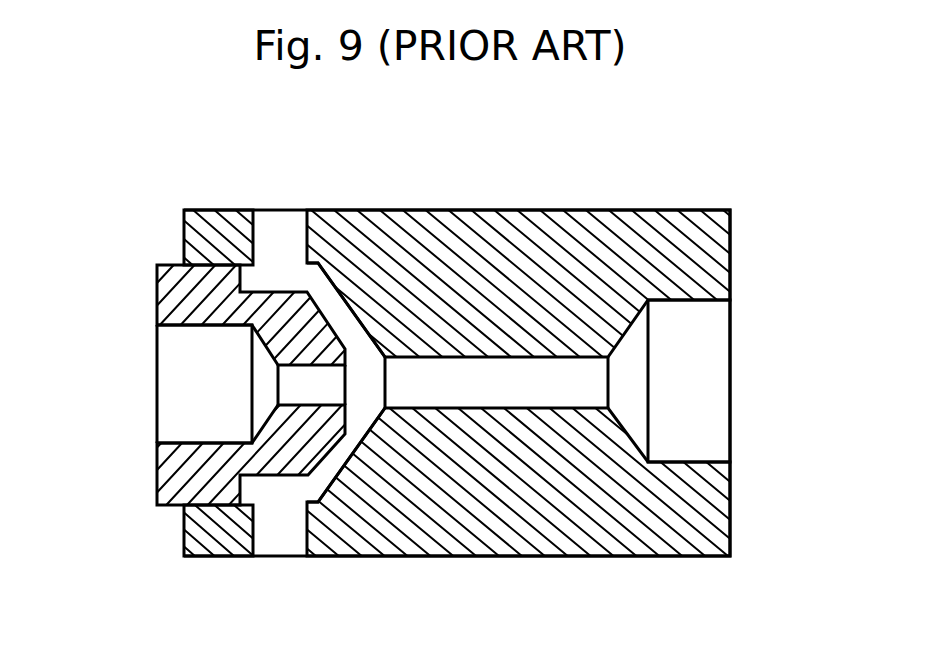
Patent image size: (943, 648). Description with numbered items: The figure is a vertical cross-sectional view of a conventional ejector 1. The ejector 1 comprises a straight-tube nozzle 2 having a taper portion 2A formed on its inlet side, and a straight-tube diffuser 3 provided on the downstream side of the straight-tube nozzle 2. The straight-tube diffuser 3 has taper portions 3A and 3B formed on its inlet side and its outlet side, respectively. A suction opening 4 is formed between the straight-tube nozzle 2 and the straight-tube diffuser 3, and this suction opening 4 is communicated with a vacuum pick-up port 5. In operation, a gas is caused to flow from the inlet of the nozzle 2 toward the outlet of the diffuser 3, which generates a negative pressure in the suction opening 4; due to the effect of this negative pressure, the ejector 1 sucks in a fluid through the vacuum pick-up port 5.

The ejector 1 is at (664, 151).
The straight-tube nozzle 2 is at (323, 343).
The taper portion 2A is at (270, 420).
The straight-tube diffuser 3 is at (471, 452).
The taper portion 3A is at (349, 456).
The taper portion 3B is at (648, 347).
The suction opening 4 is at (353, 340).
The vacuum pick-up port 5 is at (272, 237).